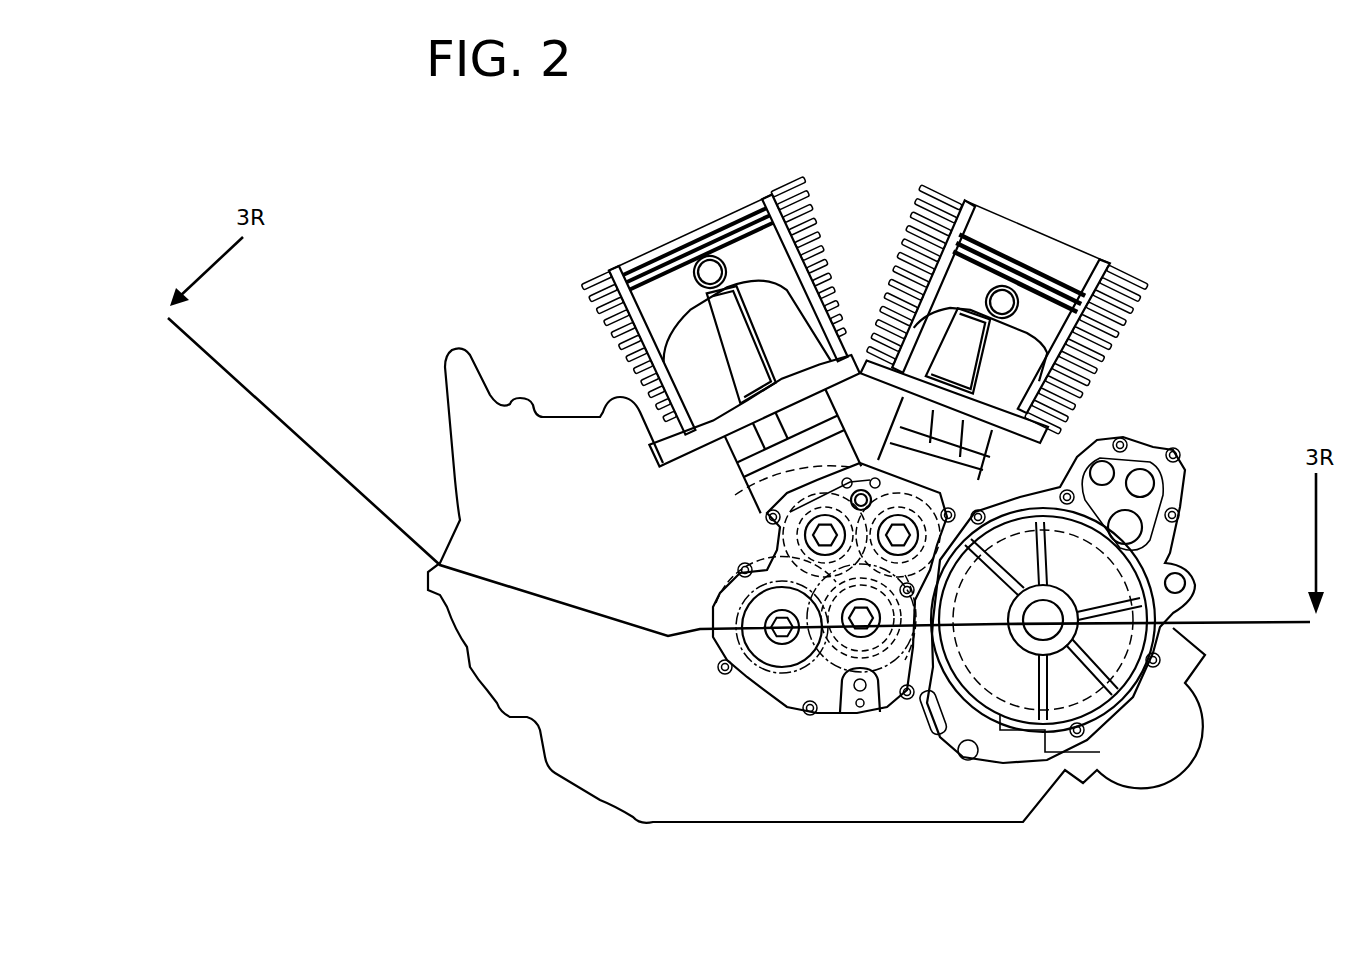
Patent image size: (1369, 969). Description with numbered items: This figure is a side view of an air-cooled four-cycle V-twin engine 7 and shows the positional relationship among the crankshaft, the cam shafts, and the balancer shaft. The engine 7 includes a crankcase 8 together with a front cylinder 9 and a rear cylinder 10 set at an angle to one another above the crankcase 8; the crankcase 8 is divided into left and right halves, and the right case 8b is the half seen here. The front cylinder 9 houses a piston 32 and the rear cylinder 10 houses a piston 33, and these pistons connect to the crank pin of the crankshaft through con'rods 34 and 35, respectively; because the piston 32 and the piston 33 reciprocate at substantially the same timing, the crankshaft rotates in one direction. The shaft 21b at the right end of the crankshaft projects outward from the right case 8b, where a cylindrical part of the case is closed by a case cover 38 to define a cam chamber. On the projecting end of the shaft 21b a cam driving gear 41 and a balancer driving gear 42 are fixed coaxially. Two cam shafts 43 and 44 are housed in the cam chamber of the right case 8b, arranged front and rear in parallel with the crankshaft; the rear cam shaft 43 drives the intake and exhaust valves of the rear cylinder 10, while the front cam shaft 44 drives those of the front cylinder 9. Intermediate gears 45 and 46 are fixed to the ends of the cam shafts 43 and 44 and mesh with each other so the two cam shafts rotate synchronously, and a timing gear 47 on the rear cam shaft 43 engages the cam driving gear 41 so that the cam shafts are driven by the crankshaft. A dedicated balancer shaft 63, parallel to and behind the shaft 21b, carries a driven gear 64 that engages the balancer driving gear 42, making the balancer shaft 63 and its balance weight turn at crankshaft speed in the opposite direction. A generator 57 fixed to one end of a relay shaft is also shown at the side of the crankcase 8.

The engine 7 is at (1197, 432).
The crankcase 8 is at (613, 805).
The right case 8b is at (940, 823).
The front cylinder 9 is at (1110, 270).
The rear cylinder 10 is at (614, 272).
The shaft 21b is at (853, 647).
The piston 32 is at (1020, 265).
The piston 33 is at (751, 247).
The con'rod 34 is at (958, 375).
The con'rod 35 is at (752, 338).
The case cover 38 is at (745, 688).
The cam driving gear 41 is at (887, 655).
The balancer driving gear 42 is at (948, 645).
The rear cam shaft 43 is at (798, 532).
The front cam shaft 44 is at (943, 495).
The intermediate gear 45 is at (735, 567).
The intermediate gear 46 is at (960, 563).
The timing gear 47 is at (740, 494).
The generator 57 is at (1172, 632).
The balancer shaft 63 is at (778, 648).
The driven gear 64 is at (766, 628).